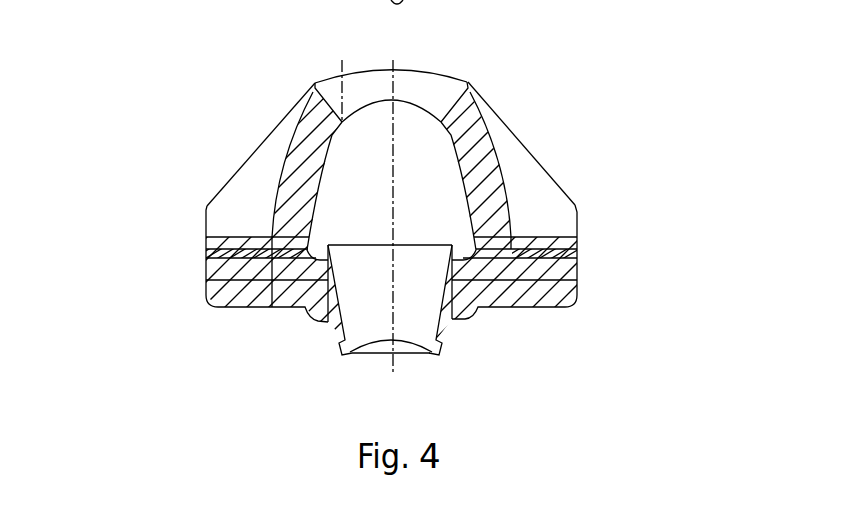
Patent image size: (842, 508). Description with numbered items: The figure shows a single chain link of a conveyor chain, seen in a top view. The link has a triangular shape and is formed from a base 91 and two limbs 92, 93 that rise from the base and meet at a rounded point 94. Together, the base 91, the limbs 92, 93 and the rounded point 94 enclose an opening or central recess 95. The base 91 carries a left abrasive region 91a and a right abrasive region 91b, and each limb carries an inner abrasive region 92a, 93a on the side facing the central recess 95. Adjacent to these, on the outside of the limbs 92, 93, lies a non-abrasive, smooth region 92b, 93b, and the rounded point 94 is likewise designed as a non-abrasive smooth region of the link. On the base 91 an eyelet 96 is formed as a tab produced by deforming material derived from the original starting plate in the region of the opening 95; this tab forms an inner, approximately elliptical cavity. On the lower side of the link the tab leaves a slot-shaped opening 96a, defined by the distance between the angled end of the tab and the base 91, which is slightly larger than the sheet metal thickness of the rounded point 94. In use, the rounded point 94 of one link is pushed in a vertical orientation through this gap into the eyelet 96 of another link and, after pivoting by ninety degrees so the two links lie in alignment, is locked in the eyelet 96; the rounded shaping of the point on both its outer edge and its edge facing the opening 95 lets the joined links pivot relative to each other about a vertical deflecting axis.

The base 91 is at (320, 326).
The left abrasive region 91a is at (252, 280).
The right abrasive region 91b is at (539, 283).
The limb 92 is at (230, 163).
The inner abrasive region 92a is at (303, 150).
The non-abrasive smooth region 92b is at (240, 214).
The limb 93 is at (551, 156).
The inner abrasive region 93a is at (503, 148).
The non-abrasive smooth region 93b is at (553, 215).
The rounded point 94 is at (451, 57).
The central recess 95 is at (405, 192).
The eyelet 96 is at (419, 324).
The slot-shaped opening 96a is at (447, 325).